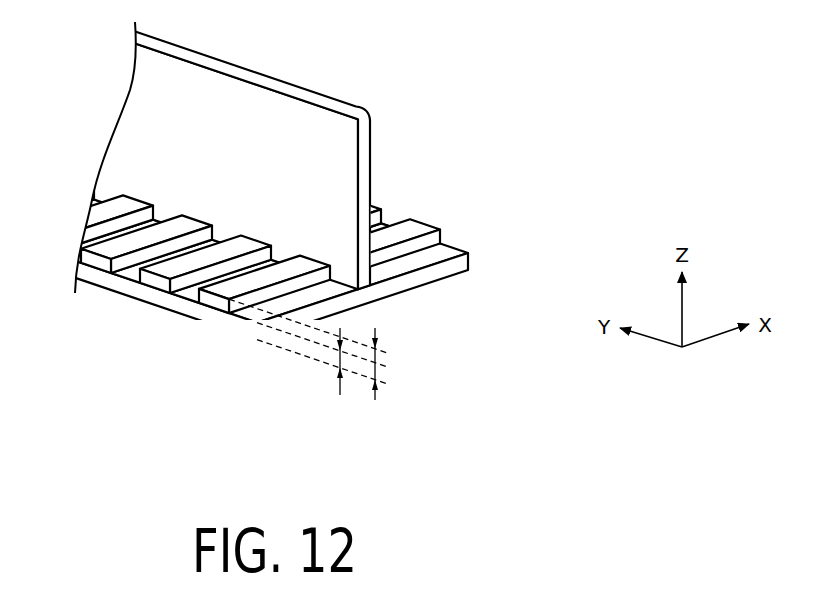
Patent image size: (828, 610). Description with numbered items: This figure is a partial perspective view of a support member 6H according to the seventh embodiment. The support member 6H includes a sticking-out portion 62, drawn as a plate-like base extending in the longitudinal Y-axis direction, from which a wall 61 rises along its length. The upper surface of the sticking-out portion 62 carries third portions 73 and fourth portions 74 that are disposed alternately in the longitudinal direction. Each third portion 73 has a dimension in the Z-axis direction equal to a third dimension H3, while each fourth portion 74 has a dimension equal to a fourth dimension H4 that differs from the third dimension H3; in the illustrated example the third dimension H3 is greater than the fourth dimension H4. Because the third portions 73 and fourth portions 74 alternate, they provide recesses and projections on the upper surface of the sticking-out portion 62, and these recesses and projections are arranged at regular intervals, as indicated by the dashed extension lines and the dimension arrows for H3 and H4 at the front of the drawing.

The support member 6H is at (264, 218).
The wall portion 61 is at (371, 140).
The sticking-out portion 62 is at (338, 302).
The third portion 73 is at (151, 289).
The fourth portion 74 is at (178, 309).
The third dimension H3 is at (323, 349).
The fourth dimension H4 is at (341, 359).